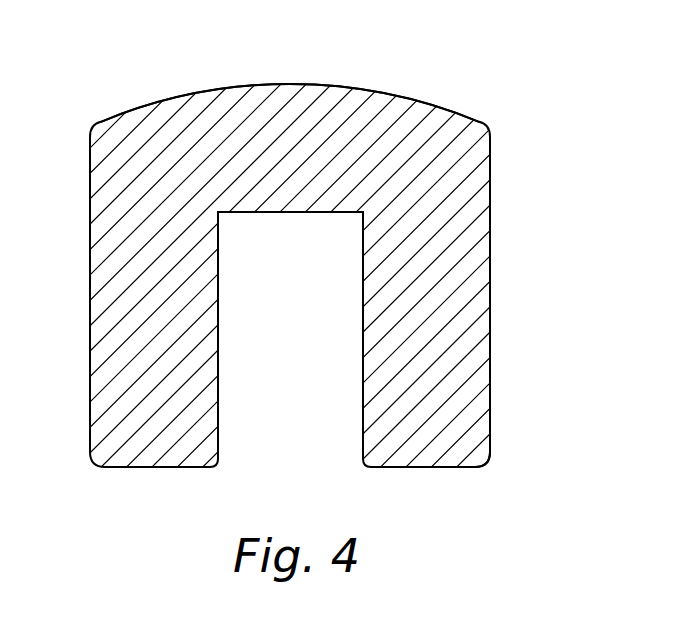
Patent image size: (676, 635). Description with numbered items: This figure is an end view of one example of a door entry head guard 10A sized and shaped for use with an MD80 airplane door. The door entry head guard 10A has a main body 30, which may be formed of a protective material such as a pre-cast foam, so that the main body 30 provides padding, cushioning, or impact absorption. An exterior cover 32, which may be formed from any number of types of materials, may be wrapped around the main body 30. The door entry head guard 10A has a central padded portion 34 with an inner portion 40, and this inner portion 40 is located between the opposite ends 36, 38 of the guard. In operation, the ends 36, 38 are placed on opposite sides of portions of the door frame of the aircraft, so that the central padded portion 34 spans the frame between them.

The door entry head guard 10A is at (338, 317).
The main body 30 is at (467, 239).
The exterior cover 32 is at (480, 410).
The central padded portion 34 is at (363, 92).
The end 36 is at (102, 335).
The end 38 is at (360, 397).
The inner portion 40 is at (303, 213).